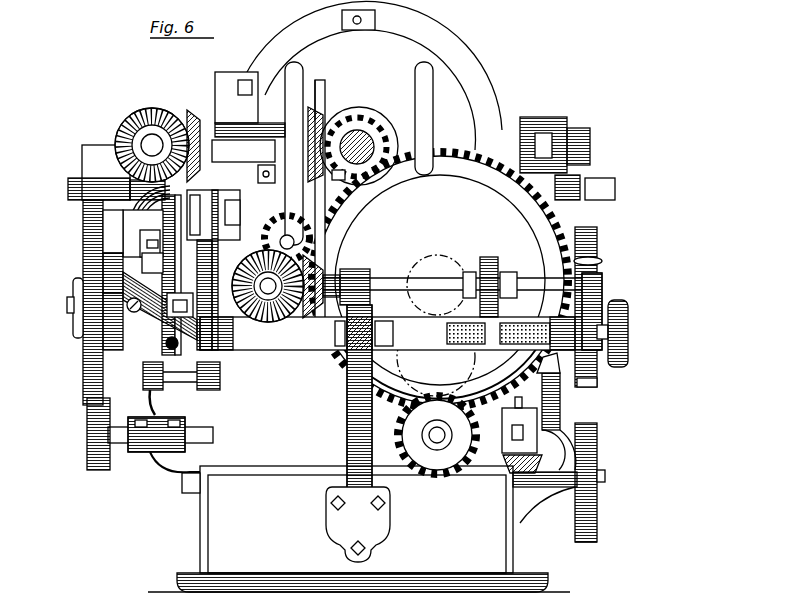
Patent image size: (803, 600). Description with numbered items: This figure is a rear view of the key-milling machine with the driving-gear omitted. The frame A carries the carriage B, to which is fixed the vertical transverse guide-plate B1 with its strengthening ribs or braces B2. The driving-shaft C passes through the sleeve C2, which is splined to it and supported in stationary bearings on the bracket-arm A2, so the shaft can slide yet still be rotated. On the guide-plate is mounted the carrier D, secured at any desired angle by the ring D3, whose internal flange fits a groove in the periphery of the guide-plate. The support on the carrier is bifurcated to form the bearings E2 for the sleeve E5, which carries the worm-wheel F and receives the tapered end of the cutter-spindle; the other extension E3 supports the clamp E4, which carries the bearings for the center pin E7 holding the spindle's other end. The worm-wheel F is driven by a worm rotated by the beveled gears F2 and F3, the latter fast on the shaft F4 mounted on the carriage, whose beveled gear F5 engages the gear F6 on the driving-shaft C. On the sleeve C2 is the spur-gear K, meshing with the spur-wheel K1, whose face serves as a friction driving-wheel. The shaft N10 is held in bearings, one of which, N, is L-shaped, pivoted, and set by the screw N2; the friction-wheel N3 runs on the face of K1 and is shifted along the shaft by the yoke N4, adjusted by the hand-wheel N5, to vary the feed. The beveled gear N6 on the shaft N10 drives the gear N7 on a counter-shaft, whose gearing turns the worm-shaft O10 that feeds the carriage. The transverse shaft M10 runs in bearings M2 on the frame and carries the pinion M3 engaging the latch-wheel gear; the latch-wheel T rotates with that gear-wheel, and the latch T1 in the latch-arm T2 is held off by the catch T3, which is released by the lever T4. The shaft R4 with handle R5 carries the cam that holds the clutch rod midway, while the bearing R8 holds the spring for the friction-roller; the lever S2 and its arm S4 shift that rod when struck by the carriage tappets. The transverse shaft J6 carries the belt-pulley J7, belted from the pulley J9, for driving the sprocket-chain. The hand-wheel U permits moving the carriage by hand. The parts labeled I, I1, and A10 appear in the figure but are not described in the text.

The frame A is at (359, 509).
The frame plate A10 is at (300, 226).
The bracket-arm A2 is at (348, 414).
The carriage B is at (322, 194).
The guide-plate B1 is at (337, 197).
The strengthening ribs or braces B2 is at (359, 153).
The driving-shaft C is at (368, 128).
The sleeve C2 is at (356, 133).
The carrier D is at (369, 75).
The ring D3 is at (372, 20).
The bearings E2 is at (97, 157).
The support extension E3 is at (592, 148).
The clamp E4 is at (543, 118).
The sleeve E5 is at (68, 190).
The center pin E7 is at (612, 190).
The worm-wheel F is at (115, 182).
The beveled gear F2 is at (128, 125).
The beveled gear F3 is at (215, 80).
The shaft F4 is at (210, 151).
The beveled gear F5 is at (320, 89).
The beveled gear F6 is at (316, 112).
The pinion I is at (443, 465).
The pitch circle I1 is at (436, 357).
The transverse shaft J6 is at (605, 482).
The belt wheel or pulley J7 is at (598, 529).
The pulley J9 is at (597, 383).
The spur-gear K is at (368, 165).
The spur-wheel K1 is at (440, 280).
The bearings M2 is at (172, 460).
The pinion M3 is at (72, 434).
The transverse shaft M10 is at (213, 431).
The L-shaped bearing N is at (602, 300).
The screw N2 is at (607, 262).
The friction-wheel N3 is at (488, 257).
The yoke N4 is at (498, 333).
The hand-wheel N5 is at (630, 348).
The beveled gear N6 is at (326, 270).
The beveled gear N7 is at (256, 318).
The shaft N10 is at (399, 277).
The worm-shaft O10 is at (333, 201).
The shaft R4 is at (192, 384).
The handle R5 is at (150, 400).
The bearing R8 is at (562, 405).
The lever S2 is at (212, 258).
The arm S4 is at (242, 186).
The latch-wheel T is at (117, 357).
The latch T1 is at (115, 248).
The latch-arm T2 is at (123, 222).
The catch T3 is at (122, 270).
The lever T4 is at (190, 203).
The hand-wheel U is at (174, 348).